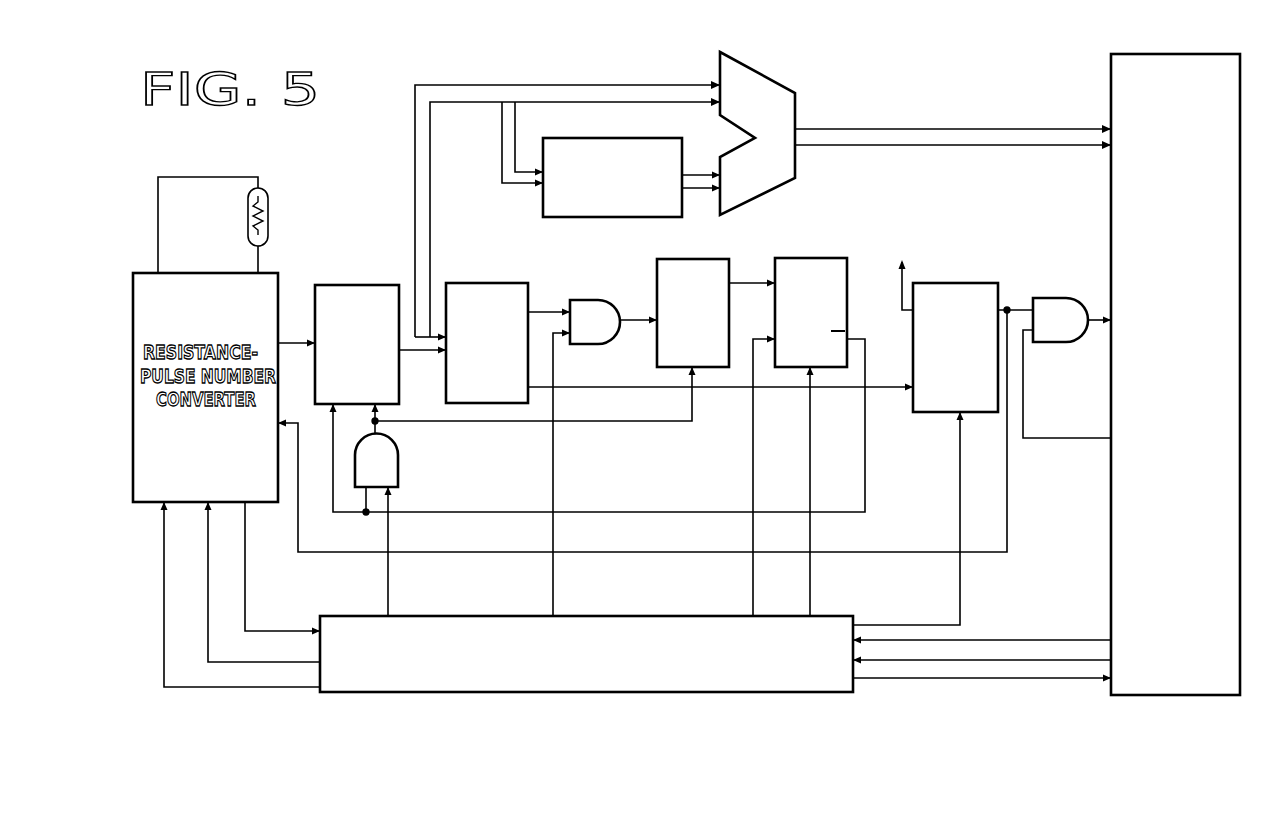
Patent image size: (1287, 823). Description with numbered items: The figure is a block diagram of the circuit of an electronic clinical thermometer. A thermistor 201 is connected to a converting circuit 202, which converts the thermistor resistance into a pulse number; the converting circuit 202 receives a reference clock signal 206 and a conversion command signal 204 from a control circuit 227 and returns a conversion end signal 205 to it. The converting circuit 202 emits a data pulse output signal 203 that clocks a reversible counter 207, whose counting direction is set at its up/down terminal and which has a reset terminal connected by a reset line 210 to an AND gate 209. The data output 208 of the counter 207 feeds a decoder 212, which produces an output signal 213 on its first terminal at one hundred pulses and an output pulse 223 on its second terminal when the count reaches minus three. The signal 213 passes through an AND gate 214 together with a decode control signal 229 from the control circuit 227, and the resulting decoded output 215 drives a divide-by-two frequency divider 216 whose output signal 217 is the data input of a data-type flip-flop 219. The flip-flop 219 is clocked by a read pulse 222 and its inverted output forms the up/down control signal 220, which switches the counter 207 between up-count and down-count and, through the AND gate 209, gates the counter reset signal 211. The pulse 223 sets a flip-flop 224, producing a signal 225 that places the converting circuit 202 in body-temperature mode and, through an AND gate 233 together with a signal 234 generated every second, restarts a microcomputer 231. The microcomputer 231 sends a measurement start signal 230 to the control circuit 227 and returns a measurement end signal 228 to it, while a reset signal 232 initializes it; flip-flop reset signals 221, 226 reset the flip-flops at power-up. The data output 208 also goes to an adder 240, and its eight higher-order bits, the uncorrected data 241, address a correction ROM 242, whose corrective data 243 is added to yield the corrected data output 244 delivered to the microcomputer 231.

The thermistor 201 is at (266, 195).
The converting circuit 202 is at (270, 269).
The data pulse output signal 203 is at (291, 338).
The conversion command signal 204 is at (208, 513).
The conversion end signal 205 is at (245, 590).
The reference clock signal 206 is at (164, 570).
The counter 207 is at (359, 286).
The data output 208 is at (462, 82).
The AND gate 209 is at (398, 463).
The reset line 210 is at (638, 418).
The counter reset signal 211 is at (388, 534).
The decoder 212 is at (478, 288).
The output signal from terminal T1 213 is at (542, 302).
The AND gate 214 is at (591, 303).
The decoded output 215 is at (632, 314).
The divide-by-2 frequency divider 216 is at (674, 260).
The output signal of frequency divider 217 is at (754, 280).
The data-type flip-flop 219 is at (848, 254).
The up/down control signal 220 is at (901, 308).
The flip-flop reset signal 221 is at (820, 532).
The read pulse 222 is at (753, 492).
The output pulse from terminal T2 223 is at (883, 390).
The flip-flop 224 is at (960, 275).
The measurement start indicating signal 225 is at (1016, 308).
The flip-flop reset signal 226 is at (960, 583).
The control circuit 227 is at (665, 616).
The measurement end signal 228 is at (896, 664).
The decode control signal 229 is at (553, 584).
The measurement start signal 230 is at (1014, 640).
The microcomputer 231 is at (1240, 435).
The reset signal 232 is at (978, 680).
The AND gate 233 is at (1072, 298).
The signal generated every second 234 is at (1057, 438).
The adder 240 is at (791, 94).
The uncorrected data 241 is at (502, 143).
The correction ROM 242 is at (550, 207).
The corrective data 243 is at (696, 176).
The corrected data output 244 is at (932, 128).